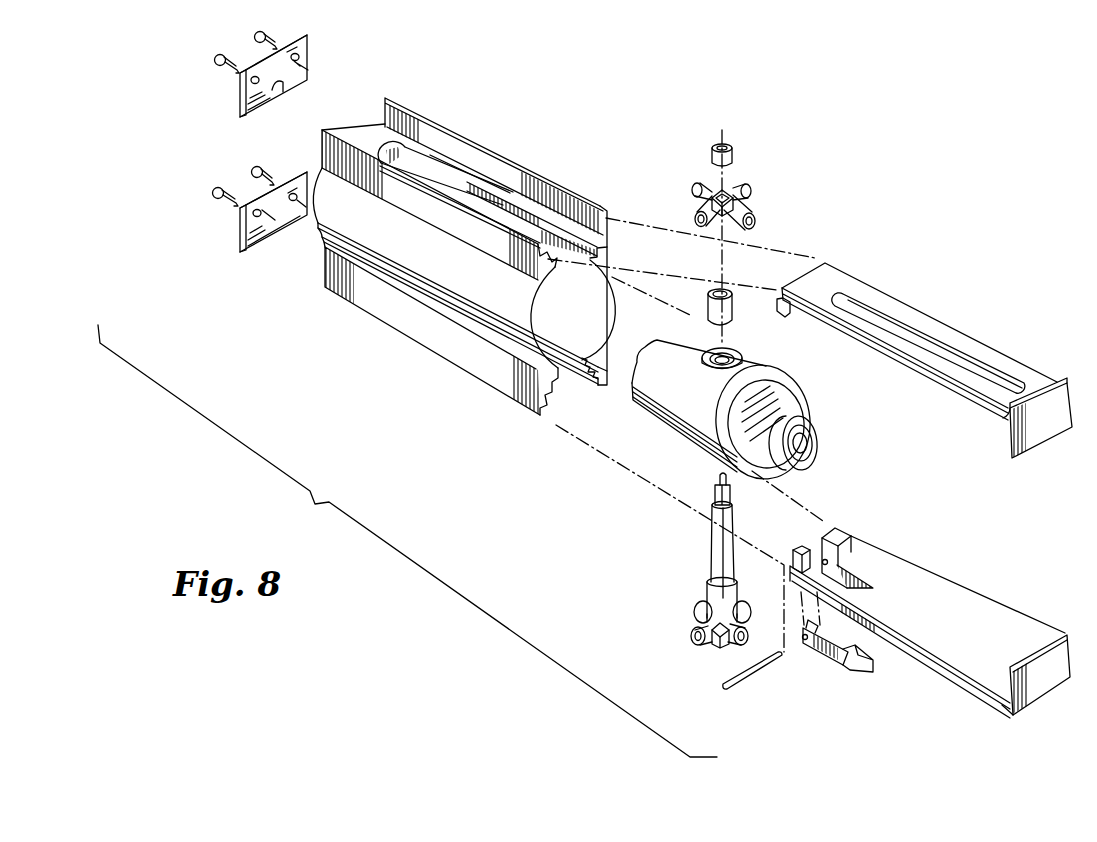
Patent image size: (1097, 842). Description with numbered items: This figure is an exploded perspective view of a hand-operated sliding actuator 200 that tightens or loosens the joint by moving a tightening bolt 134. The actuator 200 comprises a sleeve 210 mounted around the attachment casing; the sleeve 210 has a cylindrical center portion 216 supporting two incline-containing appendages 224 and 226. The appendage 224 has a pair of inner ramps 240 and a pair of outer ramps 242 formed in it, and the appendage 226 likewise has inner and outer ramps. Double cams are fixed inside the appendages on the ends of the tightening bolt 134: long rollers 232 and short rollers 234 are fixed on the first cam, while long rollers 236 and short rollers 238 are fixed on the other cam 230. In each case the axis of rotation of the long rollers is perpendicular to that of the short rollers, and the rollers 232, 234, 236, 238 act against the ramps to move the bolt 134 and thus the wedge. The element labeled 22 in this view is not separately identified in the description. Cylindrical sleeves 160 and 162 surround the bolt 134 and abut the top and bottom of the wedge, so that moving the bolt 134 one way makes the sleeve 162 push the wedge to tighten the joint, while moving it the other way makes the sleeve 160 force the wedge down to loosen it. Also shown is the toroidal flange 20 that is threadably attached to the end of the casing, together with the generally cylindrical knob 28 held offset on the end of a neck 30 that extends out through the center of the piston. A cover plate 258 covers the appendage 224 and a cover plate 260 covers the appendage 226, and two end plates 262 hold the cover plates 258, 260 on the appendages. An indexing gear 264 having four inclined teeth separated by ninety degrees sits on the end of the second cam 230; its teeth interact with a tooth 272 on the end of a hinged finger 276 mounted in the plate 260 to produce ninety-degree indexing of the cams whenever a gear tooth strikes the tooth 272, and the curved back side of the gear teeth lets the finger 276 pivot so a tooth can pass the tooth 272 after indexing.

The sliding actuator 200 is at (903, 176).
The sleeve 210 is at (534, 108).
The cylindrical center portion 216 is at (400, 253).
The appendage 224 is at (463, 232).
The appendage 226 is at (463, 353).
The inner ramps 240 is at (538, 226).
The outer ramps 242 is at (506, 186).
The end plates 262 is at (233, 97).
The cross fitting 22 is at (768, 203).
The long rollers 232 is at (707, 184).
The short rollers 234 is at (746, 190).
The cylindrical sleeve 160 is at (735, 316).
The toroidal flange 20 is at (774, 372).
The neck 30 is at (782, 402).
The knob 28 is at (794, 411).
The cover plate 258 is at (1020, 362).
The cover plate 260 is at (963, 622).
The tooth 272 is at (845, 654).
The hinged finger 276 is at (818, 650).
The tightening bolt 134 is at (718, 532).
The cylindrical sleeve 162 is at (713, 568).
The second cam 230 is at (675, 622).
The long rollers 236 is at (742, 606).
The short rollers 238 is at (700, 613).
The indexing gear 264 is at (720, 651).